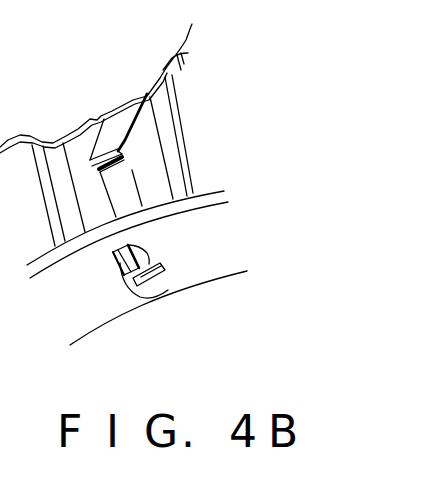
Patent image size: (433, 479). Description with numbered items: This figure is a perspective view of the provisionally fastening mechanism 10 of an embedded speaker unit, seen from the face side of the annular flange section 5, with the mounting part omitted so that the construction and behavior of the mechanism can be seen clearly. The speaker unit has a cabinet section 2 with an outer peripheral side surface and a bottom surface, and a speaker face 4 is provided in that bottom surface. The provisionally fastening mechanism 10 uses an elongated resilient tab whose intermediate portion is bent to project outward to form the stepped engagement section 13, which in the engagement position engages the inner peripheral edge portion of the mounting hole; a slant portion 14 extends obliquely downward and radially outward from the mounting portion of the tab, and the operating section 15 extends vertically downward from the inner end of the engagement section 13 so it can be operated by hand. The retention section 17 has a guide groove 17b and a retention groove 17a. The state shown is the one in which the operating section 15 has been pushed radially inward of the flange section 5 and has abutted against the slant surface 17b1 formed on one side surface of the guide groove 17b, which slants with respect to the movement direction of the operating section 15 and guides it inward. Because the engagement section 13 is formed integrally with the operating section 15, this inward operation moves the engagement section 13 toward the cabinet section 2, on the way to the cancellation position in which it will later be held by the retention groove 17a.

The cabinet section 2 is at (181, 35).
The speaker face 4 is at (100, 337).
The flange section 5 is at (60, 287).
The provisionally fastening mechanism 10 is at (100, 96).
The engagement section 13 is at (135, 162).
The slant portion 14 is at (116, 130).
The operating section 15 is at (148, 297).
The retention section 17 is at (227, 308).
The retention groove 17a is at (162, 283).
The guide groove 17b is at (207, 308).
The slant surface 17b1 is at (109, 256).